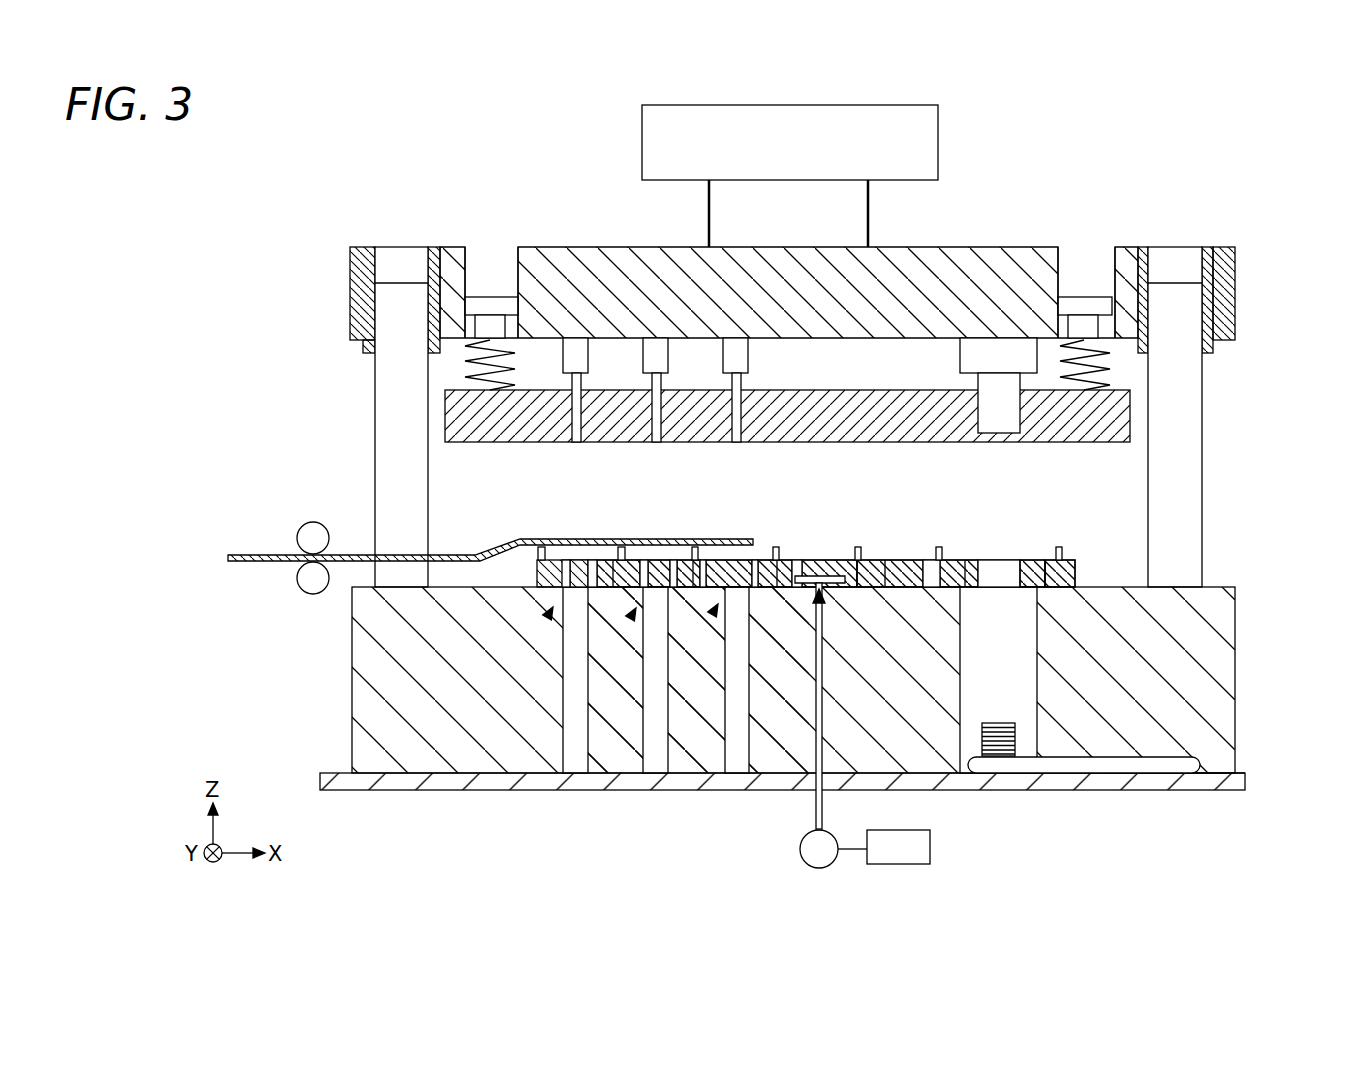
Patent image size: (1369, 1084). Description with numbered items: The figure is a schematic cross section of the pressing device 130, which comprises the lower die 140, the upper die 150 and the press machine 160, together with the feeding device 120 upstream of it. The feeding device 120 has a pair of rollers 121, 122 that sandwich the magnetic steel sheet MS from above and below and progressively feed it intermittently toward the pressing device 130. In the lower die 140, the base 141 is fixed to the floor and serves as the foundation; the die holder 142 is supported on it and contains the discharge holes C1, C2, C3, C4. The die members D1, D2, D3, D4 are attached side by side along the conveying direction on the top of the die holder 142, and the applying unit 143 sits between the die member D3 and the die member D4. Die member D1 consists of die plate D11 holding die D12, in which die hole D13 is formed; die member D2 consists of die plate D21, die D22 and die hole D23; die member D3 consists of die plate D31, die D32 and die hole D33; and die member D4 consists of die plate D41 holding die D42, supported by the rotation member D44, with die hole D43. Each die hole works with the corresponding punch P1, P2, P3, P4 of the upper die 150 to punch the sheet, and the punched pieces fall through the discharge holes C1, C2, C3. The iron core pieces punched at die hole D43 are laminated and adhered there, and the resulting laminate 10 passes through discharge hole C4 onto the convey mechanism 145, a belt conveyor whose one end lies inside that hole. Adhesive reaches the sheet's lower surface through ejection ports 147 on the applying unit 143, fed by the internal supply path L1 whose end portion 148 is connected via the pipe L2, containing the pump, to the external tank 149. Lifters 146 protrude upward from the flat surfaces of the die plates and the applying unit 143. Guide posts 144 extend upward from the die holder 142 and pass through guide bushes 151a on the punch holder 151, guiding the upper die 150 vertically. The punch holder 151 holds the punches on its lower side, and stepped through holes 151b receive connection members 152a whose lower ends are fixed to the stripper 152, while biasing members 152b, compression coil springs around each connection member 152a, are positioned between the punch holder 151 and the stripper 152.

The pressing device 130 is at (1203, 142).
The upper die 150 is at (1259, 291).
The lower die 140 is at (1289, 619).
The feeding device 120 is at (257, 469).
The press machine 160 is at (940, 143).
The punch holder 151 is at (1001, 262).
The guide bush 151a is at (369, 247).
The through hole 151b is at (478, 296).
The stripper 152 is at (1120, 428).
The connection member 152a is at (500, 306).
The biasing member 152b is at (468, 372).
The guide post 144 is at (386, 403).
The roller 121 is at (313, 522).
The roller 122 is at (313, 594).
The magnetic steel sheet MS is at (258, 555).
The punch P1 is at (589, 358).
The punch P2 is at (669, 358).
The punch P3 is at (749, 358).
The punch P4 is at (958, 356).
The die plate D11 is at (542, 575).
The die D12 is at (585, 578).
The die hole D13 is at (552, 578).
The die plate D21 is at (620, 578).
The die D22 is at (655, 578).
The die hole D23 is at (675, 578).
The die plate D31 is at (718, 578).
The die D32 is at (762, 578).
The die hole D33 is at (742, 578).
The die plate D41 is at (1070, 578).
The die D42 is at (1027, 578).
The die hole D43 is at (987, 578).
The rotation member D44 is at (957, 578).
The die member D1 is at (585, 688).
The die member D2 is at (666, 693).
The die member D3 is at (747, 690).
The die member D4 is at (1050, 613).
The discharge hole C1 is at (551, 610).
The discharge hole C2 is at (633, 612).
The discharge hole C3 is at (716, 608).
The discharge hole C4 is at (1036, 748).
The lifter 146 is at (540, 566).
The ejection port 147 is at (845, 560).
The end portion 148 is at (806, 590).
The applying unit 143 is at (733, 778).
The die holder 142 is at (1216, 690).
The base 141 is at (1247, 782).
The convey mechanism 145 is at (1165, 785).
The tank 149 is at (932, 842).
The laminate 10 is at (969, 743).
The supply path L1 is at (824, 645).
The pipe L2 is at (817, 808).